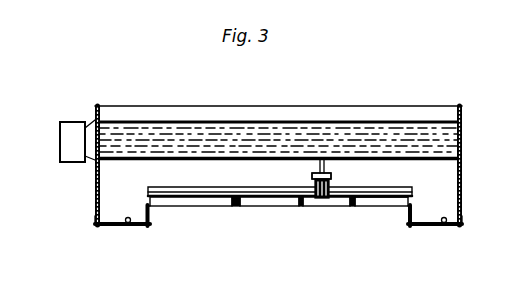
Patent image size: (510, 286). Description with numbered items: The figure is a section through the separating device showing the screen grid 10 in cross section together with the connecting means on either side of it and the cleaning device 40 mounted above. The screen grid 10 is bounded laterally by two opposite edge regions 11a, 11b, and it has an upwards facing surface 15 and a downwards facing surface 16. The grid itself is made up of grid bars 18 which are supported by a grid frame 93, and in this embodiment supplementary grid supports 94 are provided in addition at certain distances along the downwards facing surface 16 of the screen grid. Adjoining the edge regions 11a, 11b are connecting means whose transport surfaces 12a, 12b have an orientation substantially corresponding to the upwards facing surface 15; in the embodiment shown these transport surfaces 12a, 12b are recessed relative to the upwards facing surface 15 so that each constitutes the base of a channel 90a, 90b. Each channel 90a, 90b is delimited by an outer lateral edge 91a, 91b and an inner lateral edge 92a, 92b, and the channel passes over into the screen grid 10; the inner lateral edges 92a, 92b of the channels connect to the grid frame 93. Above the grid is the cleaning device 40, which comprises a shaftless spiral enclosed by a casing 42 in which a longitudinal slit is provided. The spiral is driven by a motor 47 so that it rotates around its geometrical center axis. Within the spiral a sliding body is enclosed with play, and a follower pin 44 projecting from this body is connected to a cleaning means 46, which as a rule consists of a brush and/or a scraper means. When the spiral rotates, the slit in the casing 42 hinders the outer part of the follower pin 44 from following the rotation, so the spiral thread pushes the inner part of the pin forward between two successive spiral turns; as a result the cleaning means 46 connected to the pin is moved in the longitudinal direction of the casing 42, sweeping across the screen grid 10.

The screen grid 10 is at (251, 207).
The edge region 11a is at (172, 192).
The edge region 11b is at (395, 193).
The transport surface 12a is at (123, 226).
The transport surface 12b is at (445, 226).
The upwards facing surface 15 is at (248, 187).
The downwards facing surface 16 is at (355, 204).
The grid bars 18 is at (297, 207).
The cleaning device 40 is at (300, 112).
The casing 42 is at (393, 130).
The follower pin 44 is at (333, 175).
The cleaning means 46 is at (312, 176).
The motor 47 is at (62, 147).
The channel 90a is at (118, 216).
The channel 90b is at (437, 217).
The outer lateral edge 91a is at (98, 205).
The outer lateral edge 91b is at (463, 203).
The inner lateral edge 92a is at (146, 219).
The inner lateral edge 92b is at (418, 208).
The grid frame 93 is at (150, 210).
The supplementary grid supports 94 is at (235, 210).